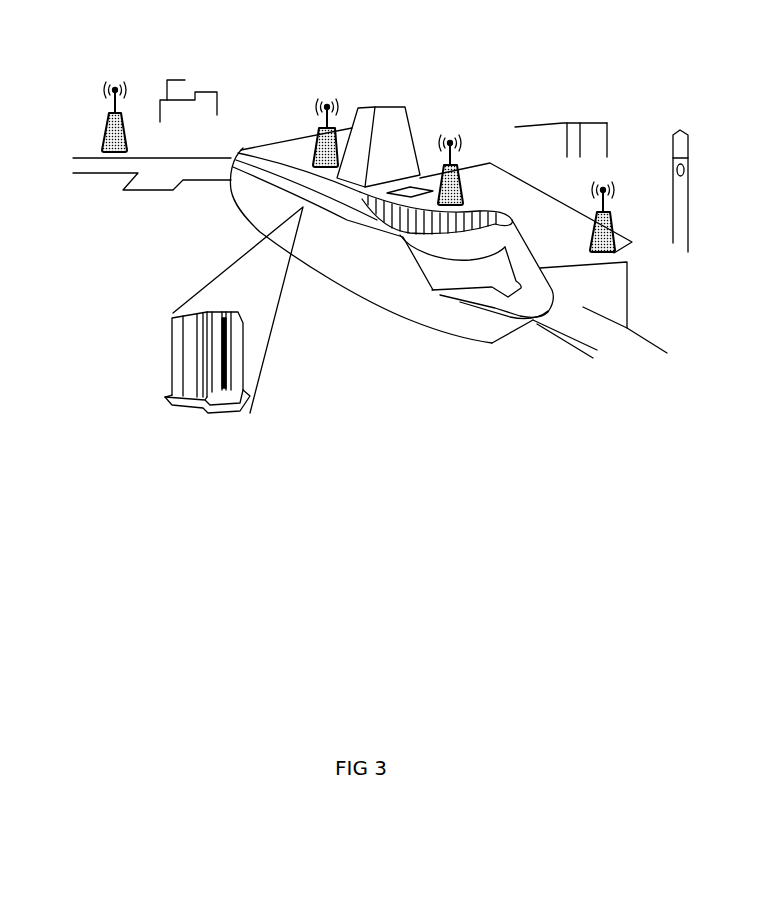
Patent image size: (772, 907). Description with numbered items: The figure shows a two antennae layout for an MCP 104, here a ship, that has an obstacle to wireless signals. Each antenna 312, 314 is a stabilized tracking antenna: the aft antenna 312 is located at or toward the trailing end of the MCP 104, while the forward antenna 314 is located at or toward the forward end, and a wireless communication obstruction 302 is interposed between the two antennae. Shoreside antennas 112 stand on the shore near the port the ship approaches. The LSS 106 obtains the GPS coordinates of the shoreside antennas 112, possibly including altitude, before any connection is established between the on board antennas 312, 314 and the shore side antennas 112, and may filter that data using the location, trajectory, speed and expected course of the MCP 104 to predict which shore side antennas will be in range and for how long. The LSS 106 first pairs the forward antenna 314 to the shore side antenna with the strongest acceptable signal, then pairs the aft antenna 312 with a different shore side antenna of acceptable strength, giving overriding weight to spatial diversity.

The MCP 104 is at (492, 343).
The LSS 106 is at (238, 418).
The shoreside antennas 112 is at (115, 88).
The wireless communication obstruction 302 is at (372, 117).
The aft antenna 312 is at (317, 138).
The forward antenna 314 is at (450, 141).